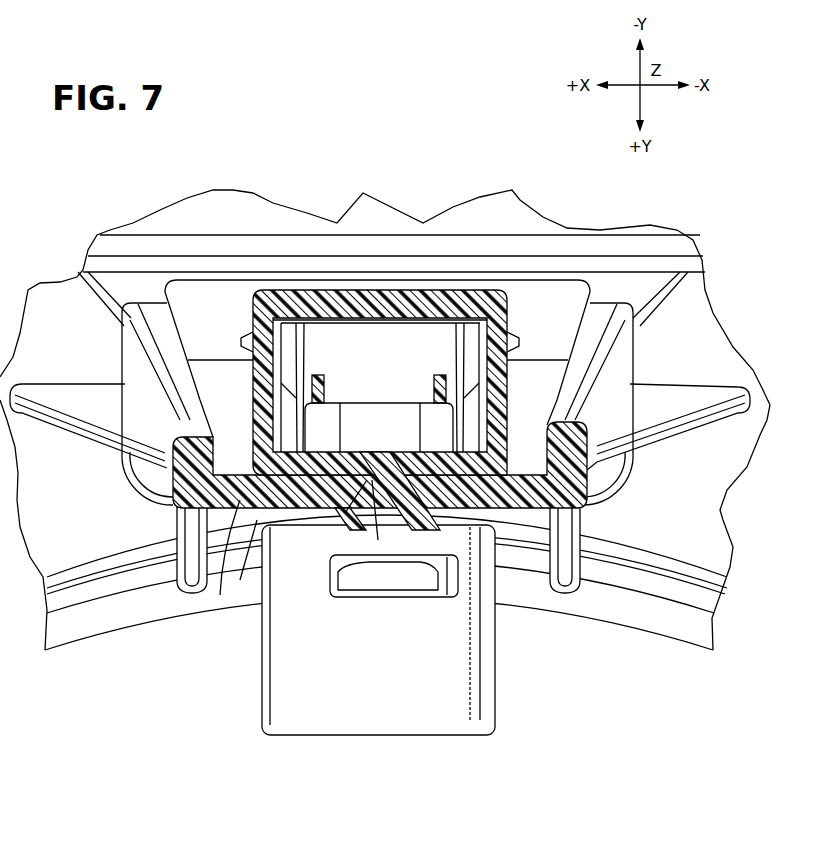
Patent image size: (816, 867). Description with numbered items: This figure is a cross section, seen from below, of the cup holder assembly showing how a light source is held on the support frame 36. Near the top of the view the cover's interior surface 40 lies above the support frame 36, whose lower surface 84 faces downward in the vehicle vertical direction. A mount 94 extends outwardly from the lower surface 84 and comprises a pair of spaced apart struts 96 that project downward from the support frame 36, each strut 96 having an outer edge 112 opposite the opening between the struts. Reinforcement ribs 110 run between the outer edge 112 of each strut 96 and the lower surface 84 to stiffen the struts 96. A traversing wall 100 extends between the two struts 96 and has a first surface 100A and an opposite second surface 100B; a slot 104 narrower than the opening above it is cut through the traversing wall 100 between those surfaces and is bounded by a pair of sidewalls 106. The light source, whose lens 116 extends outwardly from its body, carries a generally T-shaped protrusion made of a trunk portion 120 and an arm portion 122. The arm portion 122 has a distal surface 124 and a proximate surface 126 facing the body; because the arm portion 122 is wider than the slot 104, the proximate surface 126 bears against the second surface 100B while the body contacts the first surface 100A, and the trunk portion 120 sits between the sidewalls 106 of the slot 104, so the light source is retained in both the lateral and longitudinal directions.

The support frame 36 is at (762, 446).
The interior surface 40 is at (192, 318).
The lower surface 84 is at (670, 350).
The mount 94 is at (652, 457).
The strut 96 is at (173, 465).
The traversing wall 100 is at (518, 475).
The first surface 100A is at (220, 595).
The second surface 100B is at (240, 580).
The slot 104 is at (412, 480).
The sidewall 106 is at (373, 452).
The reinforcement rib 110 is at (78, 400).
The outer edge 112 is at (132, 357).
The lens 116 is at (478, 686).
The trunk portion 120 is at (345, 513).
The arm portion 122 is at (378, 540).
The distal surface 124 is at (300, 500).
The proximate surface 126 is at (405, 495).